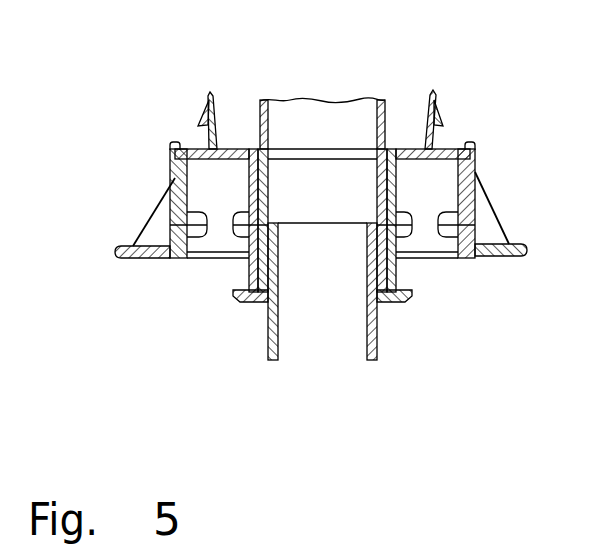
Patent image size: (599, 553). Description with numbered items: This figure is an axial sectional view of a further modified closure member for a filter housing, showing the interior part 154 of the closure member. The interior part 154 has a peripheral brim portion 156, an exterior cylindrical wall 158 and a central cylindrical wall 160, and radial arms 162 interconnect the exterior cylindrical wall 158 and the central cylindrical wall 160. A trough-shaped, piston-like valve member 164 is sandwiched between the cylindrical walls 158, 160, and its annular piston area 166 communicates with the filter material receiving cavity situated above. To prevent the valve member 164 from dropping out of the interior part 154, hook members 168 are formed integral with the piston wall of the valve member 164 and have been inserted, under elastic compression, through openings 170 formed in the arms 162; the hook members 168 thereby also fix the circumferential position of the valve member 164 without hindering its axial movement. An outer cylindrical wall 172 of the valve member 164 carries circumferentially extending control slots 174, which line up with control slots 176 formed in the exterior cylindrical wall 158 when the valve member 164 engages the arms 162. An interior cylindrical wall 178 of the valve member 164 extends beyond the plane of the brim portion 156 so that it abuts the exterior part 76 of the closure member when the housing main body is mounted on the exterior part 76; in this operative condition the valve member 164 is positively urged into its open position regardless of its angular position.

The interior part 154 is at (128, 343).
The peripheral brim portion 156 is at (135, 258).
The exterior cylindrical wall 158 is at (168, 180).
The central cylindrical wall 160 is at (247, 255).
The radial arms 162 is at (241, 149).
The valve member 164 is at (397, 147).
The annular piston area 166 is at (222, 149).
The hook members 168 is at (206, 100).
The openings 170 is at (197, 129).
The outer cylindrical wall 172 is at (475, 172).
The control slots 174 is at (442, 227).
The control slots 176 is at (475, 228).
The interior cylindrical wall 178 is at (390, 270).
The exterior part 76 is at (384, 329).